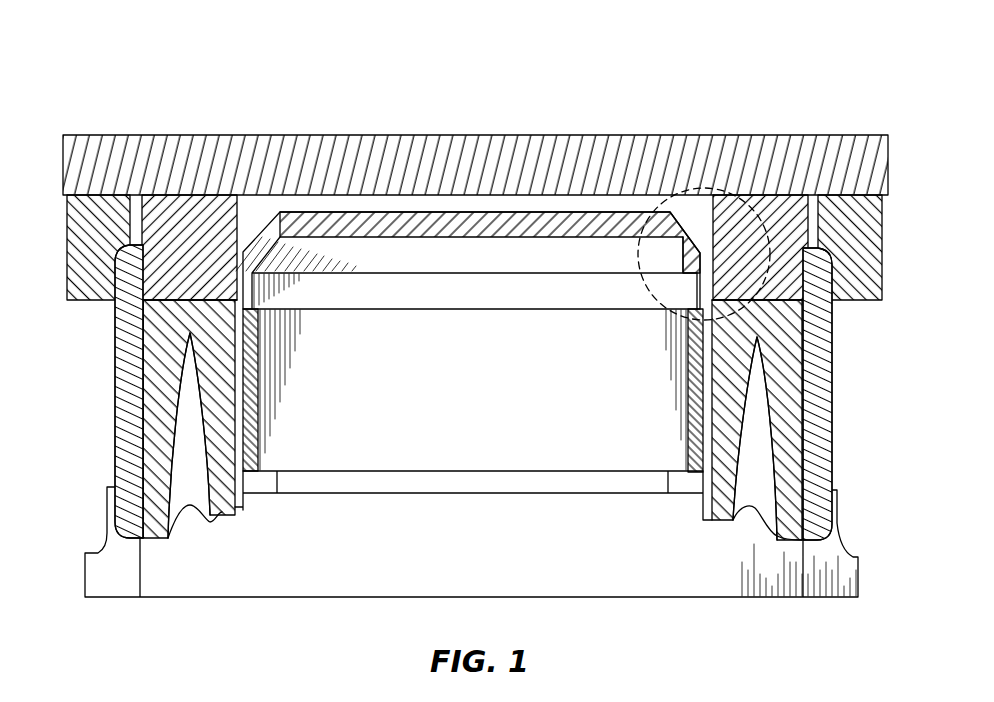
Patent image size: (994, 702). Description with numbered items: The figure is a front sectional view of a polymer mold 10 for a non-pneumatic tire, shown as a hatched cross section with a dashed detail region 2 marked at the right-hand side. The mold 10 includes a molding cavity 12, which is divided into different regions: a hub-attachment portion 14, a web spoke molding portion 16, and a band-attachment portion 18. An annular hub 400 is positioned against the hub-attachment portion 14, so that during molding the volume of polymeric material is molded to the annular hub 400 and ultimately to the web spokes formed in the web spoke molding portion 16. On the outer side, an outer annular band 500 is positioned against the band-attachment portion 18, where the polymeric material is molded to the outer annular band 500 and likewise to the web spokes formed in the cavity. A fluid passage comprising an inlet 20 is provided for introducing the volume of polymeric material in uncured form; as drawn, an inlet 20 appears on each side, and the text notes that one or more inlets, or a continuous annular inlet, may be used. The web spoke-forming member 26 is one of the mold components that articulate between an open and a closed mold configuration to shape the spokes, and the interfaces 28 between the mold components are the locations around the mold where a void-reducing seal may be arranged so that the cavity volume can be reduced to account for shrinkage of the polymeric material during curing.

The polymer mold 10 is at (116, 63).
The detail region 2 is at (718, 197).
The molding cavity 12 is at (205, 300).
The hub-attachment portion 14 is at (238, 452).
The web spoke molding portion 16 is at (177, 432).
The band-attachment portion 18 is at (142, 497).
The inlet 20 is at (248, 227).
The web spoke-forming member 26 is at (222, 512).
The interfaces 28 is at (155, 293).
The annular hub 400 is at (258, 390).
The outer annular band 500 is at (115, 373).